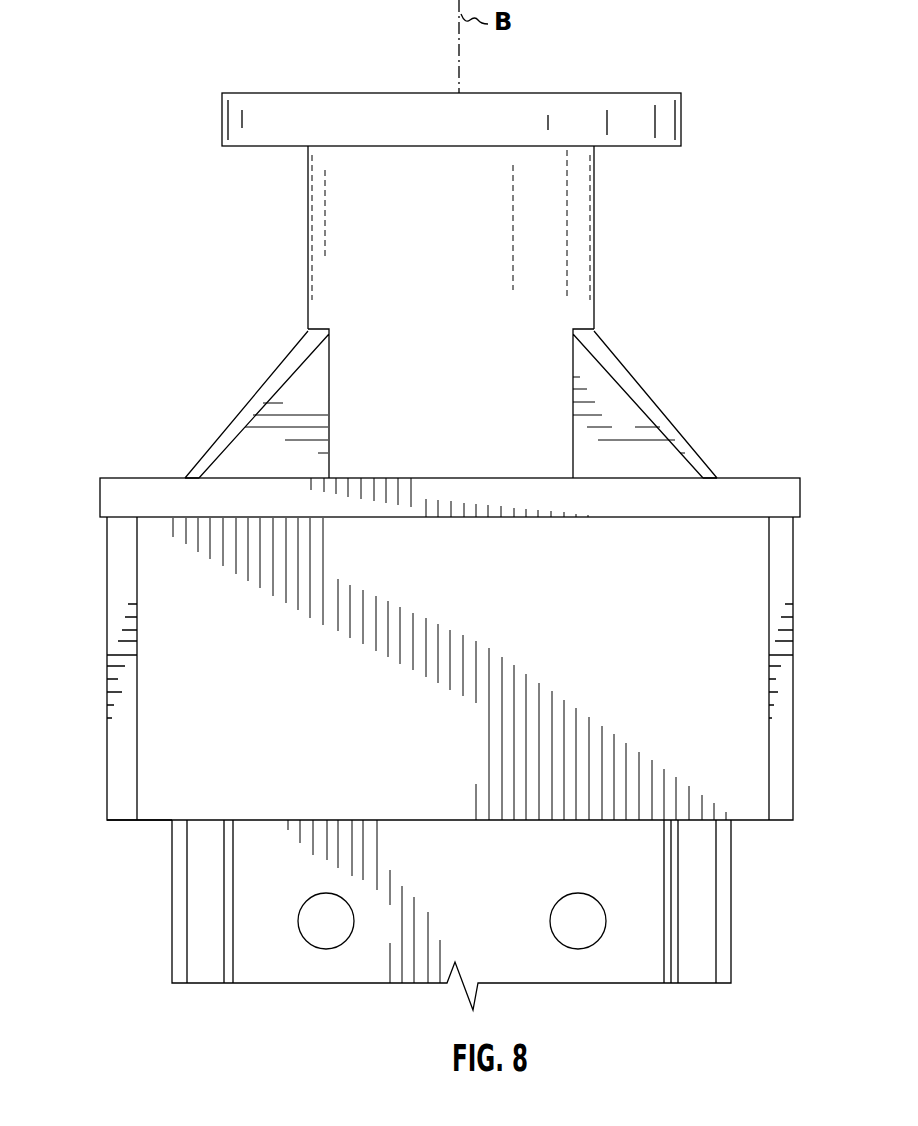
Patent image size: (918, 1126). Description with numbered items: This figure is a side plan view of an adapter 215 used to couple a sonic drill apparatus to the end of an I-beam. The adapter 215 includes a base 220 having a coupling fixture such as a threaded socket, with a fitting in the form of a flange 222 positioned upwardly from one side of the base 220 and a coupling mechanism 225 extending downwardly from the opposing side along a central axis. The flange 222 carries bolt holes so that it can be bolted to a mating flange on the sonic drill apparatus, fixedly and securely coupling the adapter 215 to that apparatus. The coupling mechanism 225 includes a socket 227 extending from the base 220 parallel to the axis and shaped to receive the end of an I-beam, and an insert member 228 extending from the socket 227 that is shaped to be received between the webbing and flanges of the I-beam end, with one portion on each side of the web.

The adapter 215 is at (201, 260).
The base 220 is at (142, 478).
The flange 222 is at (681, 118).
The coupling mechanism 225 is at (106, 610).
The socket 227 is at (152, 821).
The insert member 228 is at (733, 887).